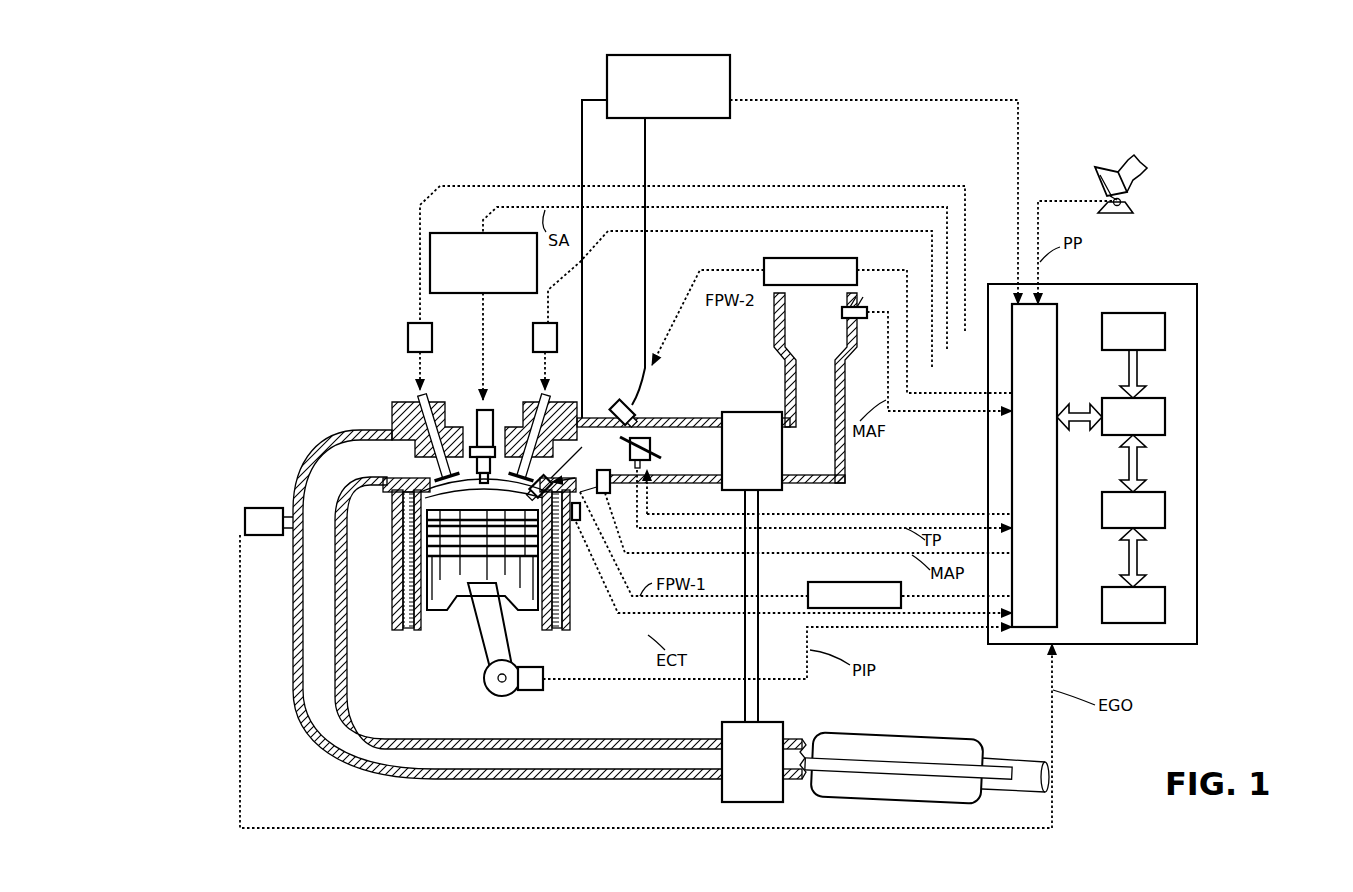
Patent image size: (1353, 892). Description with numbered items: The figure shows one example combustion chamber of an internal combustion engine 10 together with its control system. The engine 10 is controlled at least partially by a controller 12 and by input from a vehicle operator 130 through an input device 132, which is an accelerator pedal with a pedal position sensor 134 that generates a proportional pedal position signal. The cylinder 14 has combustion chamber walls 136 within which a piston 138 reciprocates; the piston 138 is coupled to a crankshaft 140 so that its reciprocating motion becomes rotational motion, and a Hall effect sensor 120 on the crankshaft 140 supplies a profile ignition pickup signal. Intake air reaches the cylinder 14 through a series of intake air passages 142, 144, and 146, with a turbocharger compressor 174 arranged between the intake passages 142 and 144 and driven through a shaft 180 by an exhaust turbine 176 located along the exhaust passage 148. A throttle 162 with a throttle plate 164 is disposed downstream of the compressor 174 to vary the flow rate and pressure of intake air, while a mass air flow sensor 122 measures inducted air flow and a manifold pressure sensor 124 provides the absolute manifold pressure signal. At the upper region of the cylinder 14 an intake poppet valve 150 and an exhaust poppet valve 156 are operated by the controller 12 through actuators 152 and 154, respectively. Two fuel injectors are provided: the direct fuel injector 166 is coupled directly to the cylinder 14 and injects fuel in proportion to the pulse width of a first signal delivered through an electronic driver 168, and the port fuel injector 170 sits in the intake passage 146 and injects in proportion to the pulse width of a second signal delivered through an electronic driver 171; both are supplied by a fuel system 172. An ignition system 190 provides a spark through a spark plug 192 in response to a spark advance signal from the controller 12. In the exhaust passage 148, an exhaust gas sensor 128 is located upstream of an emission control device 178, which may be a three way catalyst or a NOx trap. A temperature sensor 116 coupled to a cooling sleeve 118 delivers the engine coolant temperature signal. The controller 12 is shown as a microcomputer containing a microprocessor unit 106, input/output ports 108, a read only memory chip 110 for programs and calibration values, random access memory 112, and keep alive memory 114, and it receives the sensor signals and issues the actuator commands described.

The internal combustion engine 10 is at (330, 358).
The controller 12 is at (1197, 288).
The cylinder 14 is at (392, 515).
The microprocessor unit 106 is at (1166, 418).
The input/output ports 108 is at (1058, 305).
The read only memory chip 110 is at (1166, 330).
The random access memory 112 is at (1166, 512).
The keep alive memory 114 is at (1166, 605).
The temperature sensor 116 is at (565, 585).
The cooling sleeve 118 is at (576, 545).
The Hall effect sensor 120 is at (530, 692).
The mass air flow sensor 122 is at (860, 305).
The manifold pressure sensor 124 is at (610, 500).
The exhaust gas sensor 128 is at (245, 512).
The vehicle operator 130 is at (1145, 172).
The input device 132 is at (1100, 180).
The pedal position sensor 134 is at (1133, 211).
The combustion chamber walls 136 is at (428, 625).
The piston 138 is at (470, 600).
The crankshaft 140 is at (492, 696).
The intake air passage 142 is at (815, 388).
The intake air passage 144 is at (711, 450).
The intake air passage 146 is at (586, 466).
The exhaust passage 148 is at (507, 604).
The intake poppet valve 150 is at (520, 432).
The actuator 152 is at (533, 338).
The actuator 154 is at (408, 333).
The exhaust poppet valve 156 is at (395, 418).
The throttle 162 is at (650, 437).
The throttle plate 164 is at (612, 423).
The fuel injector 166 is at (666, 526).
The electronic driver 168 is at (810, 584).
The fuel injector 170 is at (626, 404).
The electronic driver 171 is at (766, 260).
The fuel system 172 is at (732, 58).
The compressor 174 is at (736, 412).
The exhaust turbine 176 is at (722, 788).
The emission control device 178 is at (895, 734).
The shaft 180 is at (760, 690).
The ignition system 190 is at (438, 233).
The spark plug 192 is at (478, 424).